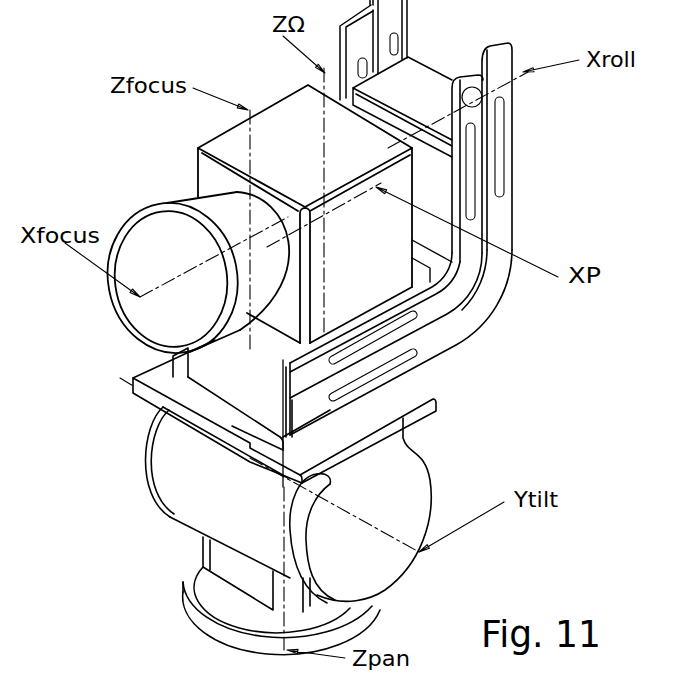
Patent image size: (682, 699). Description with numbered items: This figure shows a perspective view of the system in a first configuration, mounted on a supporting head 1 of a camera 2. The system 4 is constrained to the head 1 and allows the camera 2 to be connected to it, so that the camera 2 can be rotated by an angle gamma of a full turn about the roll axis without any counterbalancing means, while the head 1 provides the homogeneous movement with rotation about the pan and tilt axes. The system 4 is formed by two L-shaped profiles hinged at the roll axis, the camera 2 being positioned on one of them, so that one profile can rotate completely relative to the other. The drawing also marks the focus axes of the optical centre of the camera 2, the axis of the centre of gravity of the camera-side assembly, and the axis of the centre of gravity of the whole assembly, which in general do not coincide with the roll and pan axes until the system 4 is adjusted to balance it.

The head 1 is at (128, 460).
The camera 2 is at (118, 209).
The system 4 is at (487, 338).